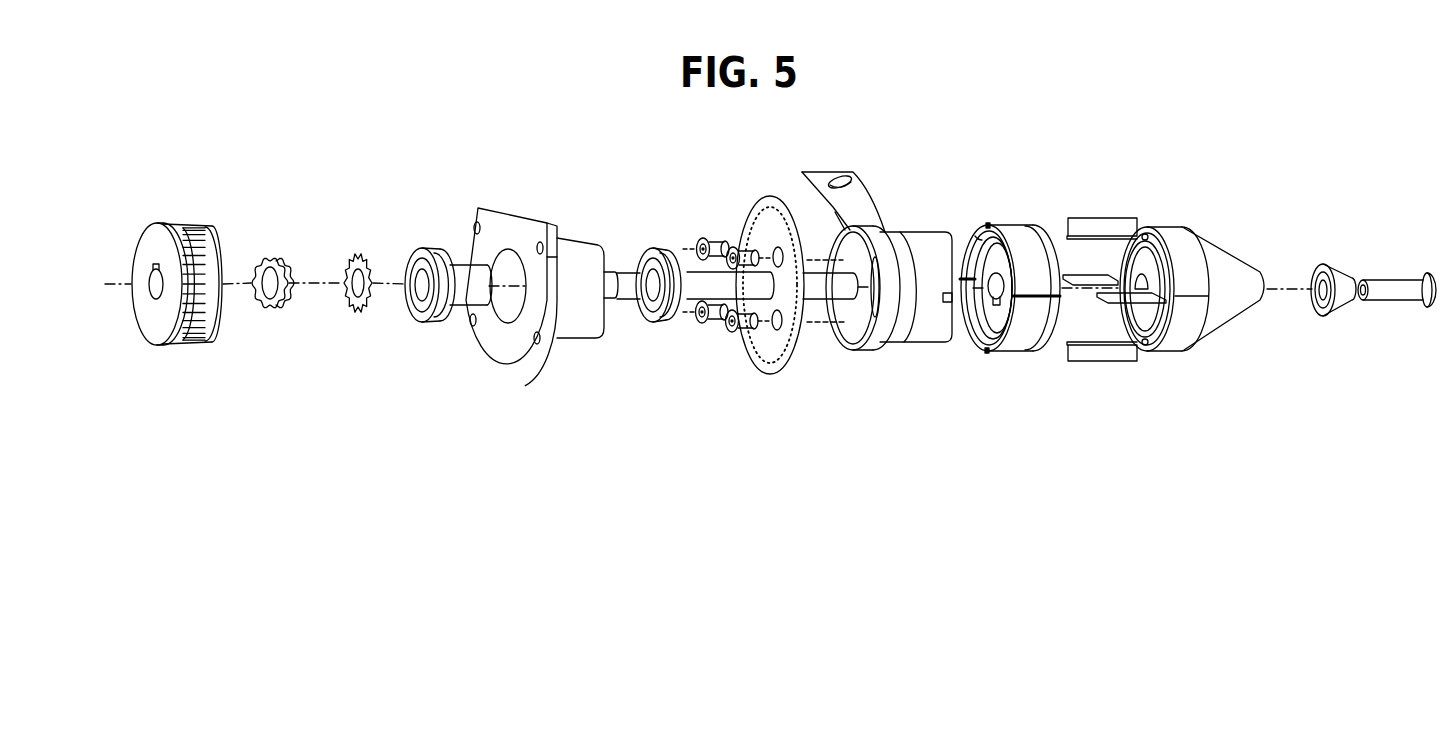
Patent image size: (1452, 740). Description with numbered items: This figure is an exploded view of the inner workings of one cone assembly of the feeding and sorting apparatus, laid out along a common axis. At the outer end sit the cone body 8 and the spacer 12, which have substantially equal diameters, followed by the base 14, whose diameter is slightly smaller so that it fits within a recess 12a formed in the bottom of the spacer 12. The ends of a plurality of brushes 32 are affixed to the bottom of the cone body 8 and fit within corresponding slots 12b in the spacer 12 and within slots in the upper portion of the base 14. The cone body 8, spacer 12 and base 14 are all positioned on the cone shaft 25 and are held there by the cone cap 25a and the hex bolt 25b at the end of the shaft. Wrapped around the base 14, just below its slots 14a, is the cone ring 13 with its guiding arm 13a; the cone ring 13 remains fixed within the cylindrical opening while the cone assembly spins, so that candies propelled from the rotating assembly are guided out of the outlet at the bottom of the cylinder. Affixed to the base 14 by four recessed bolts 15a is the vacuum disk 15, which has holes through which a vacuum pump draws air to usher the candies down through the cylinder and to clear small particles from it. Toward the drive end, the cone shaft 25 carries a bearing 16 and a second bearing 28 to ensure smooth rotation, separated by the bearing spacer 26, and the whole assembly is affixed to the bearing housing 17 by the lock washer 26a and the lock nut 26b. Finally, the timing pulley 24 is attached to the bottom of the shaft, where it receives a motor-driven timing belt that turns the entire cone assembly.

The cone body 8 is at (1178, 352).
The spacer 12 is at (1013, 353).
The recess 12a is at (978, 240).
The slots 12b is at (1040, 350).
The cone ring 13 is at (873, 343).
The guiding arm 13a is at (862, 198).
The base 14 is at (918, 344).
The slots 14a is at (915, 230).
The vacuum disk 15 is at (770, 377).
The recessed bolts 15a is at (705, 329).
The bearing 16 is at (650, 326).
The bearing housing 17 is at (573, 340).
The timing pulley 24 is at (181, 343).
The cone shaft 25 is at (822, 293).
The cone cap 25a is at (1343, 310).
The hex bolt 25b is at (1397, 290).
The bearing spacer 26 is at (460, 310).
The lock washer 26a is at (360, 320).
The lock nut 26b is at (273, 313).
The bearing 28 is at (430, 327).
The brushes 32 is at (1070, 272).